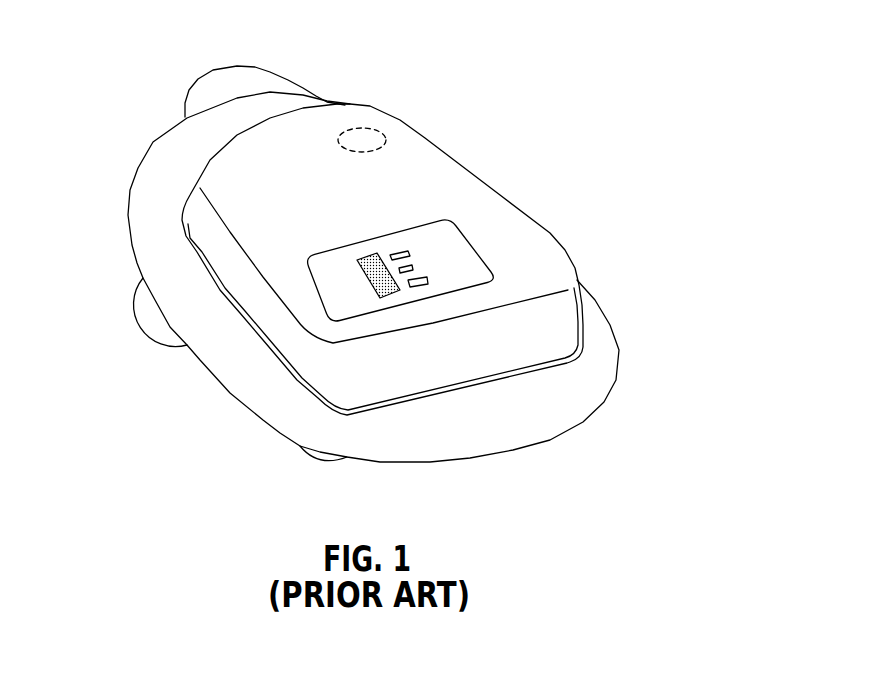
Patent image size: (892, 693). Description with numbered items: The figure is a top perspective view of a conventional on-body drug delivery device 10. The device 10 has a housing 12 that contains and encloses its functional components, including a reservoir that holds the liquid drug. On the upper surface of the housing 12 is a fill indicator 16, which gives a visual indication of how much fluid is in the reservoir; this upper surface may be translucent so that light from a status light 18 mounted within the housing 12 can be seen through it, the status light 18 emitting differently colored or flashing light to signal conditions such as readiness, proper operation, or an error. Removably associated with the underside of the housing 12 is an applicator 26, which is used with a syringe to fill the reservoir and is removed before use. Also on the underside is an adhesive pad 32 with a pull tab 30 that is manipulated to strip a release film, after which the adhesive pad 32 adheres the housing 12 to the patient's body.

The on-body device 10 is at (532, 172).
The housing 12 is at (540, 250).
The fill indicator 16 is at (366, 280).
The status light 18 is at (366, 128).
The applicator 26 is at (243, 81).
The pull tab 30 is at (140, 307).
The adhesive pad 32 is at (480, 440).